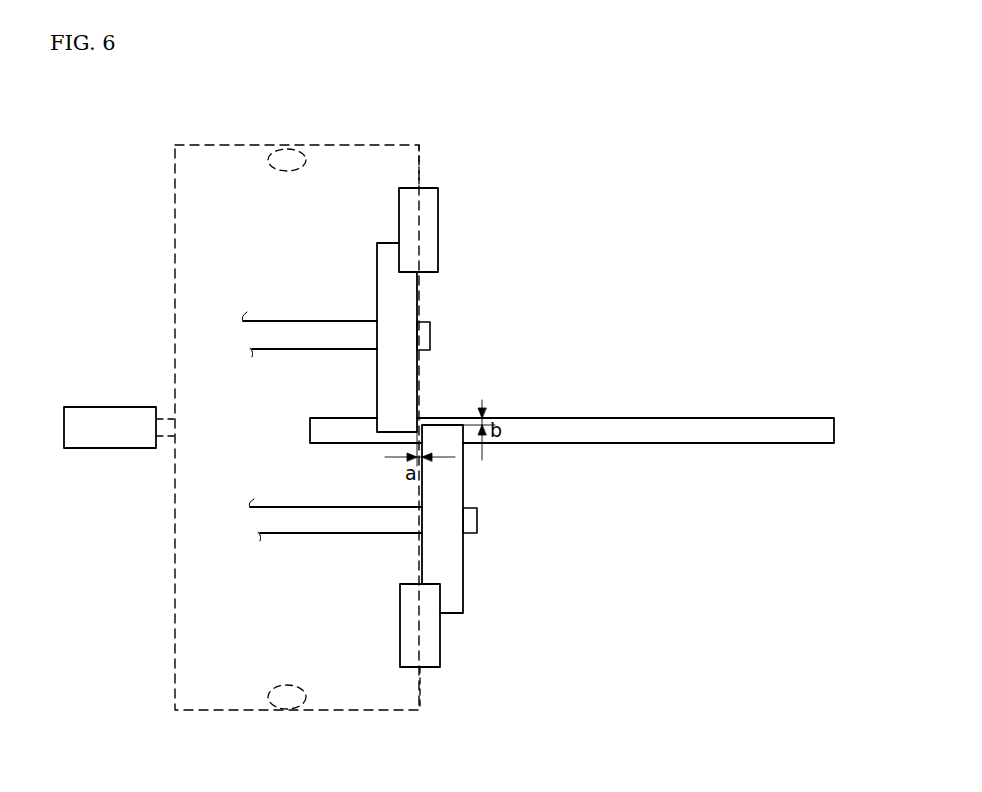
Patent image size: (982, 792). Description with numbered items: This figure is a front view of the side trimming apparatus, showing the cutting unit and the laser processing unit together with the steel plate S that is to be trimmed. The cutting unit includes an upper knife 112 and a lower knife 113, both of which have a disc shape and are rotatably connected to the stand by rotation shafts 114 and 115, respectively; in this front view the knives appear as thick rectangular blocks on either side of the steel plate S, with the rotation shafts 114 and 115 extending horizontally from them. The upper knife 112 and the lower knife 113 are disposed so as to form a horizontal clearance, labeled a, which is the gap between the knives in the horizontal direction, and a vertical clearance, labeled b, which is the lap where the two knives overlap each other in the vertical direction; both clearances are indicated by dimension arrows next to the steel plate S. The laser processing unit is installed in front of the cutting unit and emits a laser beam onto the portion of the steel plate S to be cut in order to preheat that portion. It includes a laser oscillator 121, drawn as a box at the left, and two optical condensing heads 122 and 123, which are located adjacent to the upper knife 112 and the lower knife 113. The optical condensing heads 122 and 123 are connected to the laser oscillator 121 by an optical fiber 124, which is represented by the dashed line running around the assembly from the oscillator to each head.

The upper knife 112 is at (384, 282).
The lower knife 113 is at (458, 586).
The rotation shaft 114 is at (320, 341).
The rotation shaft 115 is at (296, 522).
The laser oscillator 121 is at (110, 420).
The optical condensing head 122 is at (432, 228).
The optical condensing head 123 is at (406, 624).
The optical fiber 124 is at (374, 144).
The steel plate S is at (651, 426).